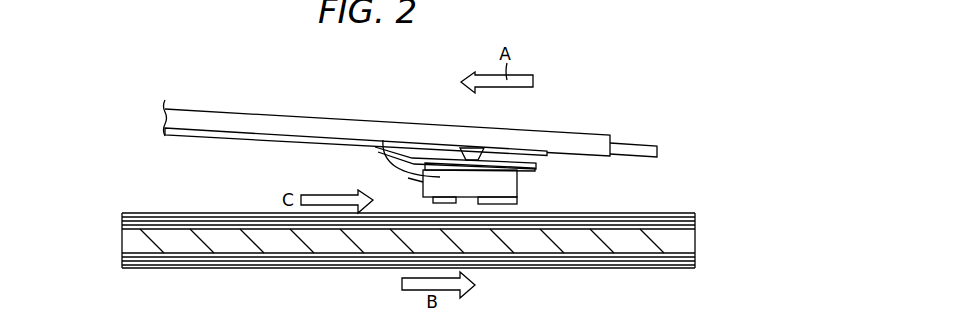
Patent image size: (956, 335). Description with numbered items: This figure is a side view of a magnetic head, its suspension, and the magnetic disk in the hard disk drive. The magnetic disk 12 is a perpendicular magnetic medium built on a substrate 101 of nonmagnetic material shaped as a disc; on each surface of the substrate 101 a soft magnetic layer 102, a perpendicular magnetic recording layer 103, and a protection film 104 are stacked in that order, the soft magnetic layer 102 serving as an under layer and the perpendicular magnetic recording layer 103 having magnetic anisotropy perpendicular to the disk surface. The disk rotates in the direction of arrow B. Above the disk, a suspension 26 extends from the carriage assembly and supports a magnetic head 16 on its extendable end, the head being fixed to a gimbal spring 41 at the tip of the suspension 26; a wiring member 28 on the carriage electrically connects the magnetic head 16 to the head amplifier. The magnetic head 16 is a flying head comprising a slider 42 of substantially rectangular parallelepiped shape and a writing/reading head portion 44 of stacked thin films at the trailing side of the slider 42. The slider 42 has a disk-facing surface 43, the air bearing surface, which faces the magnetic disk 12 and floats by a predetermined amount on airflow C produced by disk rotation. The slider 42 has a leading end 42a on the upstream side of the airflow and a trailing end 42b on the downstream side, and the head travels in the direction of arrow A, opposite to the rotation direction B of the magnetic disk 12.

The magnetic disk 12 is at (374, 234).
The magnetic head 16 is at (411, 184).
The suspension 26 is at (268, 115).
The wiring member 28 is at (207, 140).
The gimbal spring 41 is at (434, 160).
The slider 42 is at (474, 200).
The leading end 42a is at (381, 143).
The trailing end 42b is at (517, 182).
The disk-facing surface 43 is at (474, 205).
The writing/reading head portion 44 is at (508, 212).
The substrate 101 is at (200, 247).
The soft magnetic layer 102 is at (122, 232).
The perpendicular magnetic recording layer 103 is at (175, 214).
The protection film 104 is at (124, 213).